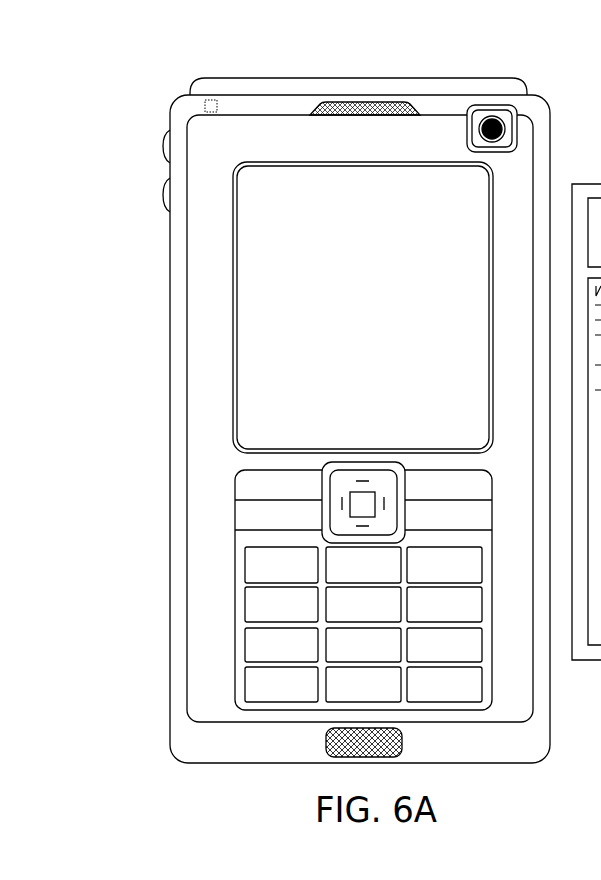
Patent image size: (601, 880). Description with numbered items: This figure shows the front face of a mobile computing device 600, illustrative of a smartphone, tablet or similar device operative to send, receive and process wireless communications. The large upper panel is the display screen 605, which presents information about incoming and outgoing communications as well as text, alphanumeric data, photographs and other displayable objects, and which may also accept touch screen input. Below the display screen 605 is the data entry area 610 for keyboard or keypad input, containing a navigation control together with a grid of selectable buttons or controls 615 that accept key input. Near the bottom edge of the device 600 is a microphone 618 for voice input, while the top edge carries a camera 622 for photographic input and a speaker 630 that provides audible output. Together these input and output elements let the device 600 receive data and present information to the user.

The mobile computing device 600 is at (160, 100).
The display screen 605 is at (266, 293).
The data entry area 610 is at (235, 512).
The selectable buttons or controls 615 is at (256, 605).
The microphone 618 is at (328, 750).
The camera 622 is at (495, 125).
The speaker 630 is at (375, 108).